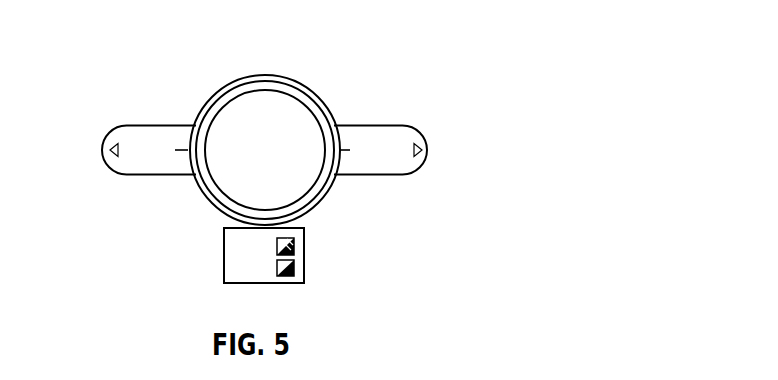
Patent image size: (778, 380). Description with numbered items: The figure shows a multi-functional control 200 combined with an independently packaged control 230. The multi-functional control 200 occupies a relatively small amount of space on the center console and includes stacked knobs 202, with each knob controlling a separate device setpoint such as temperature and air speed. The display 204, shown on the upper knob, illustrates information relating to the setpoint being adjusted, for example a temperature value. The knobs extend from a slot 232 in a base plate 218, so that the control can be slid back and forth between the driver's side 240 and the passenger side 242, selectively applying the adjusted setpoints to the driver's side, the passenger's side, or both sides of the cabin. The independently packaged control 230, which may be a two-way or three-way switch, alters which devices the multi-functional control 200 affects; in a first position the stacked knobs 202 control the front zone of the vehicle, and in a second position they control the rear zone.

The multi-functional control 200 is at (412, 62).
The stacked knobs 202 is at (265, 75).
The display 204 is at (290, 93).
The base plate 218 is at (130, 124).
The independently packaged control 230 is at (260, 285).
The slot 232 is at (178, 142).
The driver's side 240 is at (103, 148).
The passenger side 242 is at (427, 148).